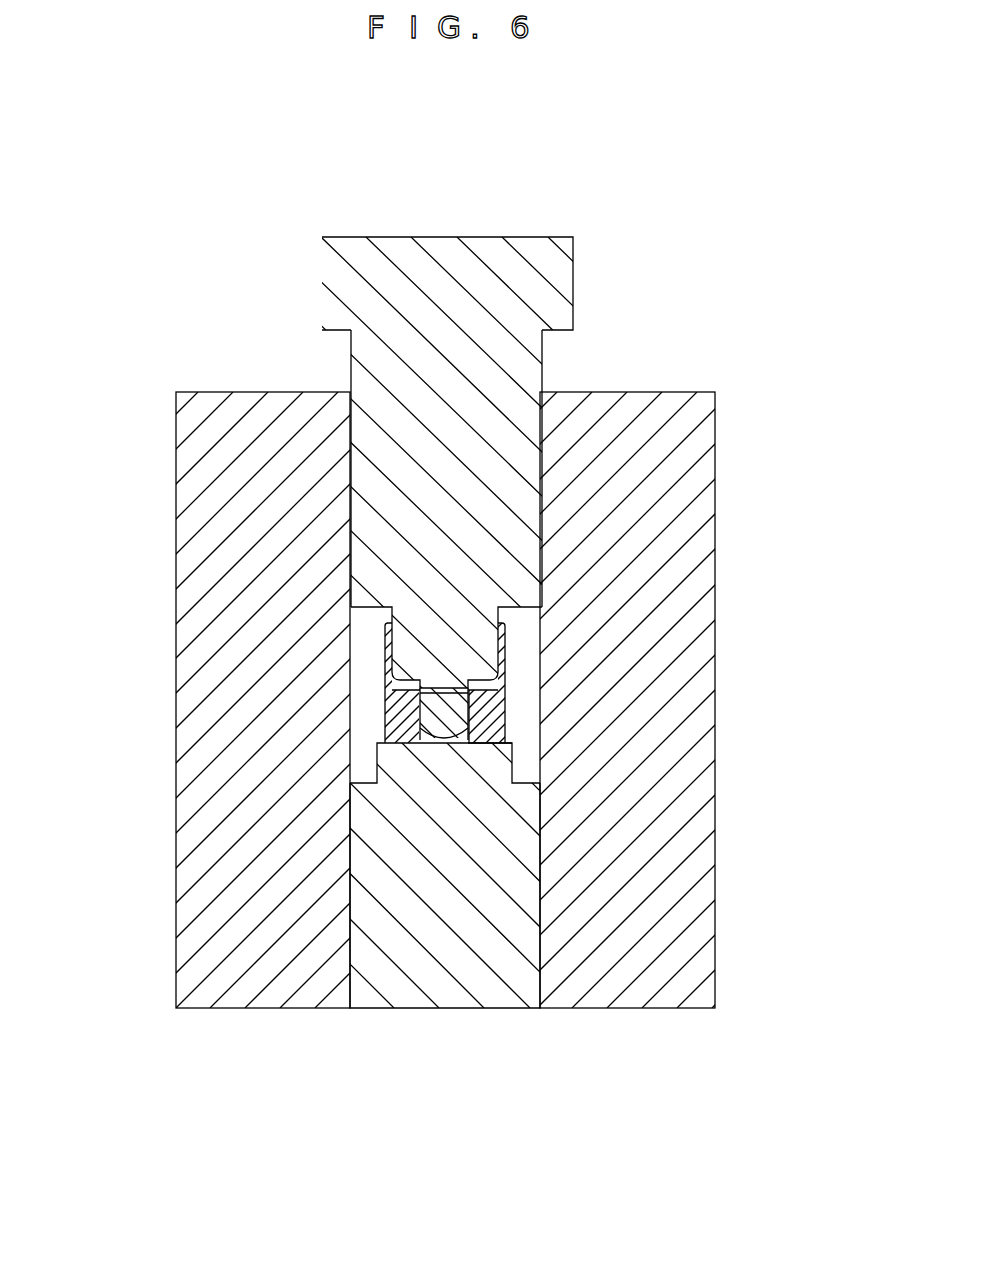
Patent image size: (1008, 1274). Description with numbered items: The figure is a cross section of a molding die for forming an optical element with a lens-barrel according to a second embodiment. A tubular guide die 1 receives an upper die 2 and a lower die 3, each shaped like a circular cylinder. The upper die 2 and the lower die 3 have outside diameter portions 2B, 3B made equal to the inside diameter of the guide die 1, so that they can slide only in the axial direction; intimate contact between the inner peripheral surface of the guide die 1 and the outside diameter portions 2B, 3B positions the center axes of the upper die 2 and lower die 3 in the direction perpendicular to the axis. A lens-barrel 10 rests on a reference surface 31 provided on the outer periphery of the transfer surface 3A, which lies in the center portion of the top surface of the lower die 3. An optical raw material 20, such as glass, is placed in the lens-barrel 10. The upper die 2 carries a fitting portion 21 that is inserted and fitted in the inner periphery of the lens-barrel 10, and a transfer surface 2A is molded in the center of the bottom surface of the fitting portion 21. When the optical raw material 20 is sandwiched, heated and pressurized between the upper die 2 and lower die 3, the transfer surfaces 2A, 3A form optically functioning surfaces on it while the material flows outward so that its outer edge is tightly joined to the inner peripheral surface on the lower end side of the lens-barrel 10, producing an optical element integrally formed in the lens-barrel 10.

The guide die 1 is at (651, 427).
The upper die 2 is at (457, 272).
The transfer surface 2A is at (447, 693).
The outside diameter portion 2B is at (408, 392).
The lower die 3 is at (417, 960).
The transfer surface 3A is at (415, 757).
The outside diameter portion 3B is at (480, 935).
The lens-barrel 10 is at (512, 715).
The optical raw material 20 is at (505, 700).
The fitting portion 21 is at (448, 648).
The reference surface 31 is at (495, 745).